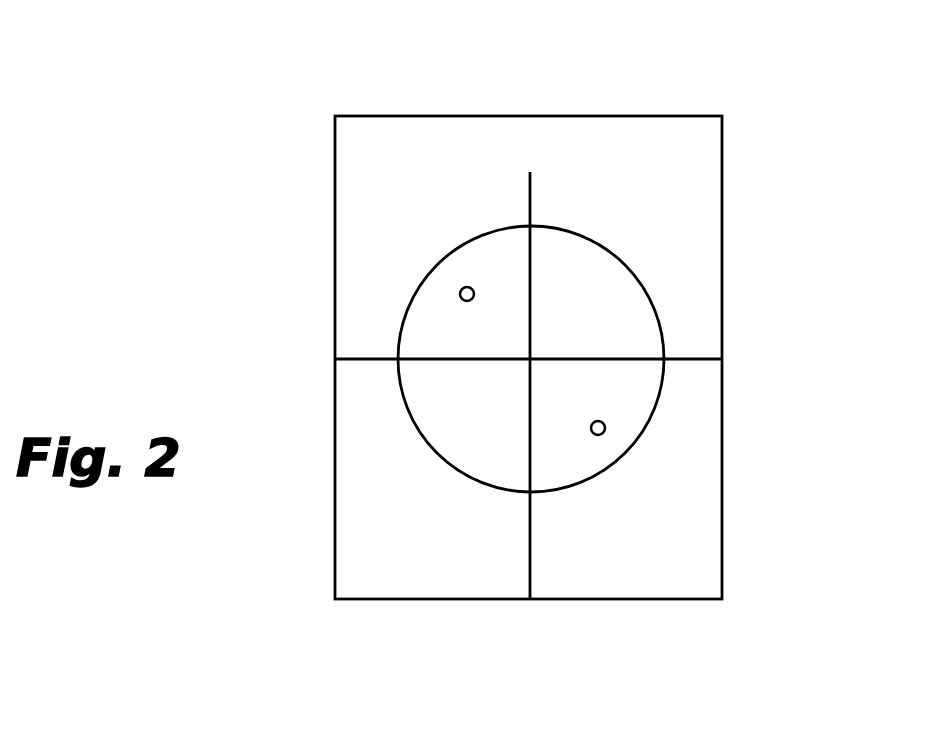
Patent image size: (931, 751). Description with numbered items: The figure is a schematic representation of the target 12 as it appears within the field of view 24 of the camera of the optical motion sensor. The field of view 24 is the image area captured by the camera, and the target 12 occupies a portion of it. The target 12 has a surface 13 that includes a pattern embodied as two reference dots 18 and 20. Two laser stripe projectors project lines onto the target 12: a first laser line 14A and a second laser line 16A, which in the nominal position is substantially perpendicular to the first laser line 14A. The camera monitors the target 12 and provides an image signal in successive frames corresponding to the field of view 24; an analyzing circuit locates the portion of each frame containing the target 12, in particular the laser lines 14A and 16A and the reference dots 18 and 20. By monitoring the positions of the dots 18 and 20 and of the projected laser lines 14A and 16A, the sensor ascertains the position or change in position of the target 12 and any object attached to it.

The target 12 is at (615, 333).
The surface 13 is at (478, 422).
The first laser line 14A is at (630, 360).
The second laser line 16A is at (638, 311).
The dot 18 is at (496, 162).
The dot 20 is at (710, 412).
The field of view 24 is at (589, 357).